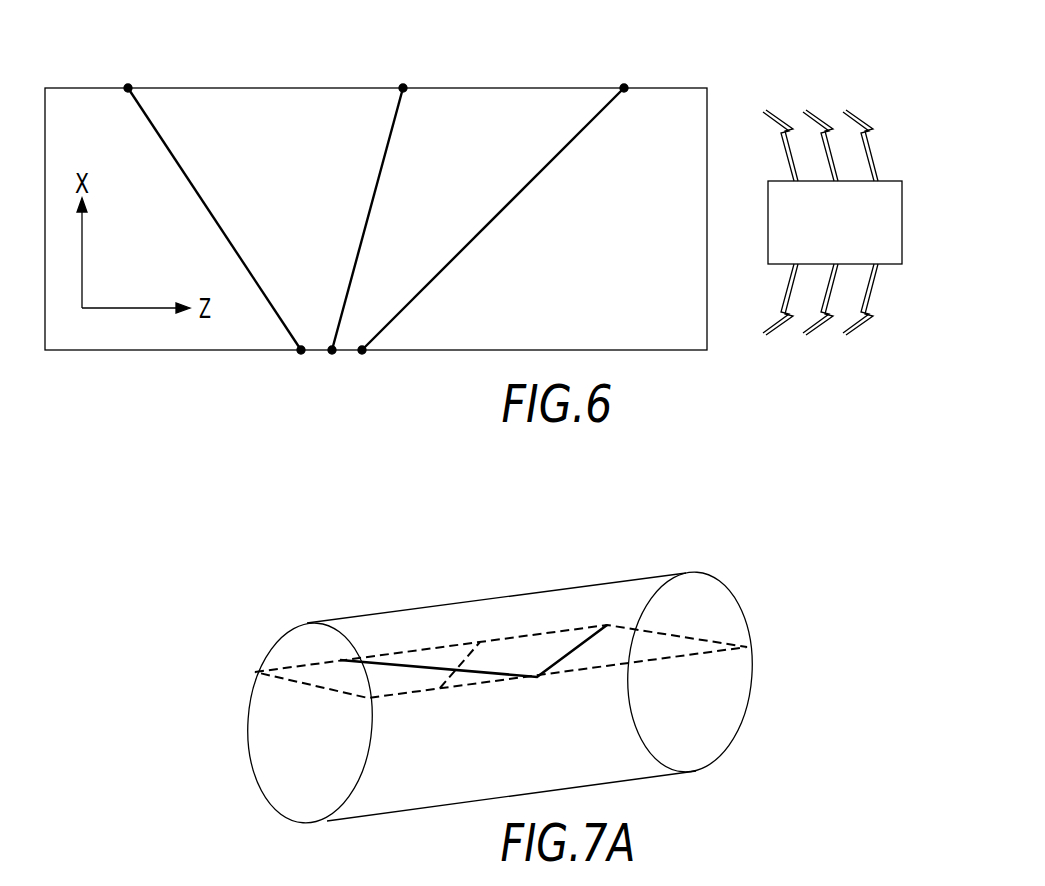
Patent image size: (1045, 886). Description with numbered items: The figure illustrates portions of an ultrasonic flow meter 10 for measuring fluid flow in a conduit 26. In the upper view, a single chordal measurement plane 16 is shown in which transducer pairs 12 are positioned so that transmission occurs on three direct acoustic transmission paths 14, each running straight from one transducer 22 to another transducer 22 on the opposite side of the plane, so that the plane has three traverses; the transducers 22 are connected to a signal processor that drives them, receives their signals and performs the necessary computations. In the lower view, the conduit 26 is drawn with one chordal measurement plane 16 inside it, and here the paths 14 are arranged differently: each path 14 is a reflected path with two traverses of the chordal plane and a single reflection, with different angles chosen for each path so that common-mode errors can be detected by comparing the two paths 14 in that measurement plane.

In FIG. 6, the ultrasonic flow meter 10 is at (888, 332).
In FIG. 6, the transducer pair 12 is at (128, 88).
In FIG. 6, the acoustic transmission path 14 is at (384, 162).
In FIG. 7A, the acoustic transmission path 14 is at (427, 665).
In FIG. 7A, the chordal measurement plane 16 is at (674, 660).
In FIG. 6, the transducer 22 is at (128, 88).
In FIG. 7A, the conduit 26 is at (614, 578).